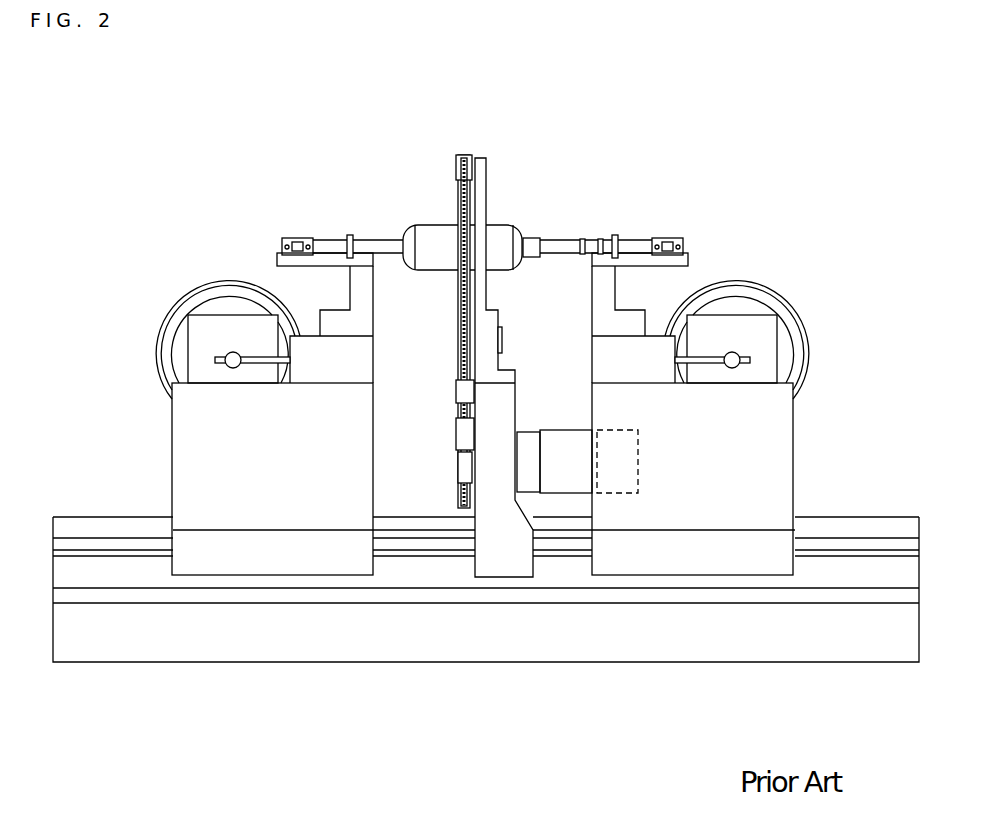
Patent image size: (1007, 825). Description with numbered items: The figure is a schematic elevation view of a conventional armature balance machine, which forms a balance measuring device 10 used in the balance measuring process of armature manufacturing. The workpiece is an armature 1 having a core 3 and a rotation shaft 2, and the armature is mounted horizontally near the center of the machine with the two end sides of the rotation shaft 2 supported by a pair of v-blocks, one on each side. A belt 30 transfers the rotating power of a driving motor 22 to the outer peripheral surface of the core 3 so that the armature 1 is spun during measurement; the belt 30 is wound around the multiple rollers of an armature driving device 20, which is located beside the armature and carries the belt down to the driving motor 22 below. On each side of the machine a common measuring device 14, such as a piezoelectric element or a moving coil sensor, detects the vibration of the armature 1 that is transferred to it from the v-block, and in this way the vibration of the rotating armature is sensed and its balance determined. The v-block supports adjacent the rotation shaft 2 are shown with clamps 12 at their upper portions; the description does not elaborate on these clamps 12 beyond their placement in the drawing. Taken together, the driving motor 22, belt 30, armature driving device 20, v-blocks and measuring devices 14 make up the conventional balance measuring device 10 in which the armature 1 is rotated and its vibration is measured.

The armature 1 is at (479, 175).
The rotation shaft 2 is at (393, 250).
The core 3 is at (504, 233).
The balance measuring device 10 is at (473, 360).
The bearing clamp 12 is at (358, 243).
The measuring device 14 is at (165, 322).
The armature driving device 20 is at (500, 403).
The driving motor 22 is at (558, 445).
The belt 30 is at (463, 195).